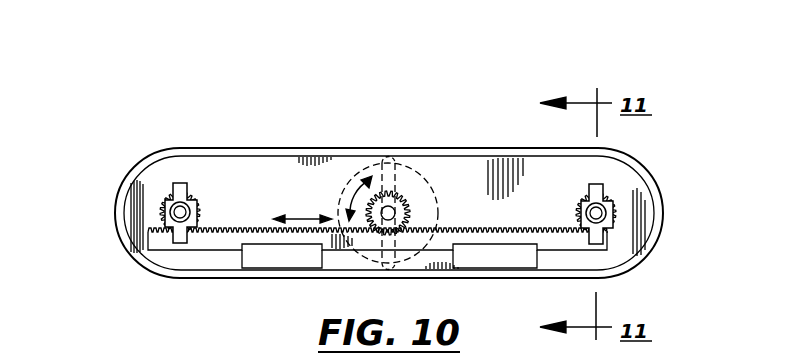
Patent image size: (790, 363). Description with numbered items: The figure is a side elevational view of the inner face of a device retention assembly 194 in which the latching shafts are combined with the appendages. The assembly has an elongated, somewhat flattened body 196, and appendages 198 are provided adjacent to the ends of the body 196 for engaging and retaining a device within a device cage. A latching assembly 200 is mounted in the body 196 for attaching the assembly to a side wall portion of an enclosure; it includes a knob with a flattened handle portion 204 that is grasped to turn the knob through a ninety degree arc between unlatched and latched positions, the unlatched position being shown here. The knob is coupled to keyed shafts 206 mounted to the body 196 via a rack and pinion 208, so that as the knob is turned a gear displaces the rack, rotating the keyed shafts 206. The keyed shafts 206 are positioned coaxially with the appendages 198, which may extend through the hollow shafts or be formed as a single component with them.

The device retention assembly 194 is at (318, 138).
The body 196 is at (659, 196).
The appendages 198 is at (167, 226).
The latching assembly 200 is at (208, 246).
The handle portion 204 is at (392, 247).
The keyed shafts 206 is at (164, 203).
The rack and pinion 208 is at (192, 238).